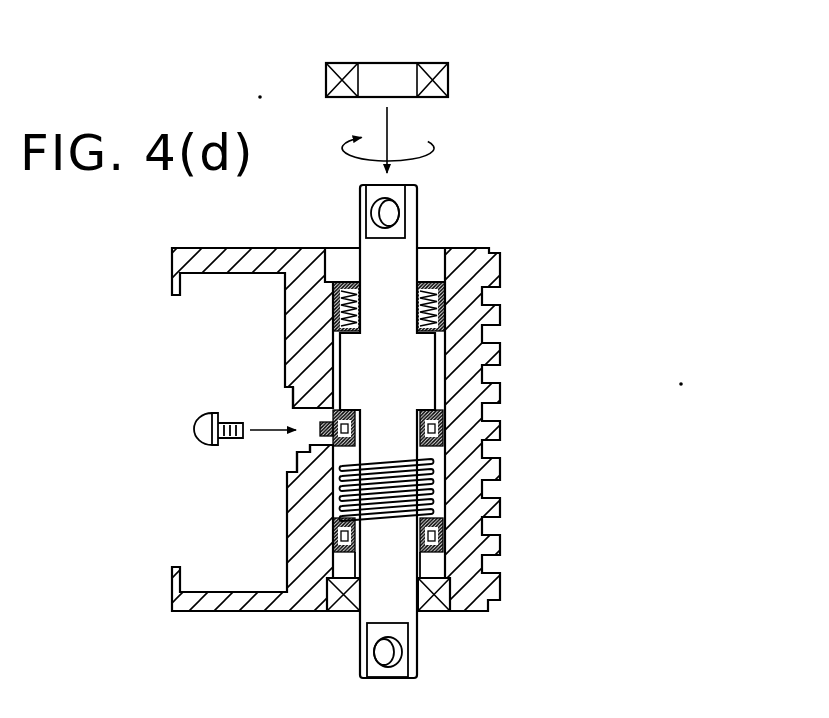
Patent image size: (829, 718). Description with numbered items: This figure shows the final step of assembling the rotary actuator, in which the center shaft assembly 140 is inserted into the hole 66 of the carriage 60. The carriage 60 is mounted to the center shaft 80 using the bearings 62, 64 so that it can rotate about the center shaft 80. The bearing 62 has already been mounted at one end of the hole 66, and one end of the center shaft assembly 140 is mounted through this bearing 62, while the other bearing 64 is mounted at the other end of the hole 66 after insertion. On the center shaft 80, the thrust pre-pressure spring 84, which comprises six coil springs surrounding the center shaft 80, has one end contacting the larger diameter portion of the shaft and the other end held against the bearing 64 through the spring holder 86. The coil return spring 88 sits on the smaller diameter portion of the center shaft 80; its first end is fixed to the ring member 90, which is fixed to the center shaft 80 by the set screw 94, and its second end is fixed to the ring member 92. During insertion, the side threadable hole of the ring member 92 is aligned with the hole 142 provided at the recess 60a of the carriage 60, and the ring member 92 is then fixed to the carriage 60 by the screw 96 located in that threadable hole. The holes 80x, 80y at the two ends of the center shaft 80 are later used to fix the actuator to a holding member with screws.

The carriage 60 is at (470, 553).
The recess 60a is at (284, 398).
The bearing 62 is at (342, 609).
The bearing 64 is at (450, 88).
The hole 66 is at (433, 262).
The center shaft 80 is at (403, 250).
The hole 80x is at (395, 213).
The hole 80y is at (391, 652).
The thrust pre-pressure spring 84 is at (437, 321).
The spring holder 86 is at (443, 288).
The coil return spring 88 is at (437, 483).
The ring member 90 is at (335, 548).
The ring member 92 is at (345, 408).
The set screw 94 is at (335, 533).
The screw 96 is at (197, 430).
The center shaft assembly 140 is at (335, 244).
The hole 142 is at (310, 443).